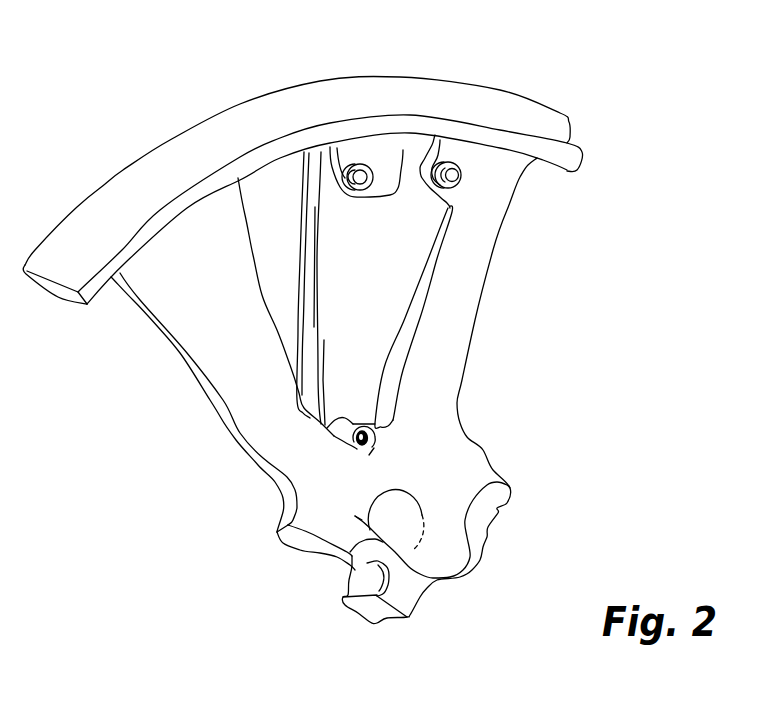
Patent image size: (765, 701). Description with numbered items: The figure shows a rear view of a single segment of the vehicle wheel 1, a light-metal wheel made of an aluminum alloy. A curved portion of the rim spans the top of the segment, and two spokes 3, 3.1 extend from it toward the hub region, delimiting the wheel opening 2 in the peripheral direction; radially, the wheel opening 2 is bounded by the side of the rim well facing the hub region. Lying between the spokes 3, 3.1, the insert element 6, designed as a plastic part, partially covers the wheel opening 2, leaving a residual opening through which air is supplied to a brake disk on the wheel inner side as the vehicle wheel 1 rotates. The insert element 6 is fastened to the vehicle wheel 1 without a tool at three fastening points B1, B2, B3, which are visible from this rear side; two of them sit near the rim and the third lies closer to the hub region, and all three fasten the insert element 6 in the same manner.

The vehicle wheel 1 is at (533, 270).
The wheel opening 2 is at (282, 244).
The spoke 3 is at (465, 311).
The spoke 3.1 is at (233, 307).
The insert element 6 is at (381, 291).
The fastening point B1 is at (368, 158).
The fastening point B2 is at (462, 160).
The fastening point B3 is at (380, 444).